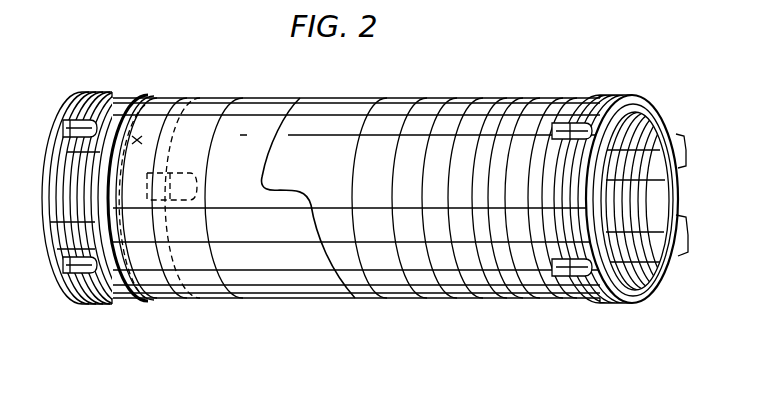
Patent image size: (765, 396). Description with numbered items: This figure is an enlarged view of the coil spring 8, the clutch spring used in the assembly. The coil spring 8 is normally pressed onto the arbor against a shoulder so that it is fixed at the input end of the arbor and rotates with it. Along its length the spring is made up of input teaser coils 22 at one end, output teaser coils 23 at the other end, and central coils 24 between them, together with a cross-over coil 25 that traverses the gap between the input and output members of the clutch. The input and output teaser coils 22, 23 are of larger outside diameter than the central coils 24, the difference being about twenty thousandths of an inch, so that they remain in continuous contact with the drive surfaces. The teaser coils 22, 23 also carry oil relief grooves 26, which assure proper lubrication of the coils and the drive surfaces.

The coil spring 8 is at (360, 204).
The input teaser coils 22 is at (121, 94).
The output teaser coils 23 is at (591, 94).
The central coils 24 is at (203, 98).
The cross-over coil 25 is at (311, 302).
The oil relief grooves 26 is at (62, 128).